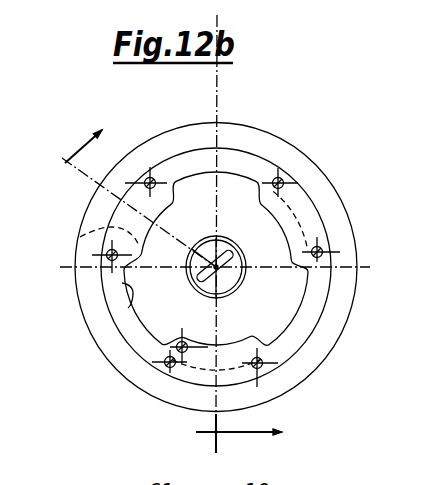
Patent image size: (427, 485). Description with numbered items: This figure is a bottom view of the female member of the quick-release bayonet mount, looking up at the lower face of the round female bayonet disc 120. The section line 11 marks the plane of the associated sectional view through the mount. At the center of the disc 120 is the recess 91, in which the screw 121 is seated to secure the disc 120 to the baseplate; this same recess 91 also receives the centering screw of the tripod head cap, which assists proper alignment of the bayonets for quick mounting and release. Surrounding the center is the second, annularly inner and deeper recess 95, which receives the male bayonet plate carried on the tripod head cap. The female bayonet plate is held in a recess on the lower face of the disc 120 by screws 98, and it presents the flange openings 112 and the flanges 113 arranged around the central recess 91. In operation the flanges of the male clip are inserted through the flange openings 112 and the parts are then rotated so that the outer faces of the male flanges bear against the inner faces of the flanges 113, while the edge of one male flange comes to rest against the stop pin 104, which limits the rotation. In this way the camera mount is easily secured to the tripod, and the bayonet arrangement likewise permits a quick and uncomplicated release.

The section line 11 is at (163, 291).
The recess 91 is at (262, 150).
The annularly inner recess 95 is at (80, 237).
The screws 98 is at (280, 178).
The stop pin 104 is at (180, 353).
The flange openings 112 is at (190, 288).
The flanges 113 is at (292, 225).
The female bayonet disc 120 is at (335, 227).
The screw 121 is at (198, 293).